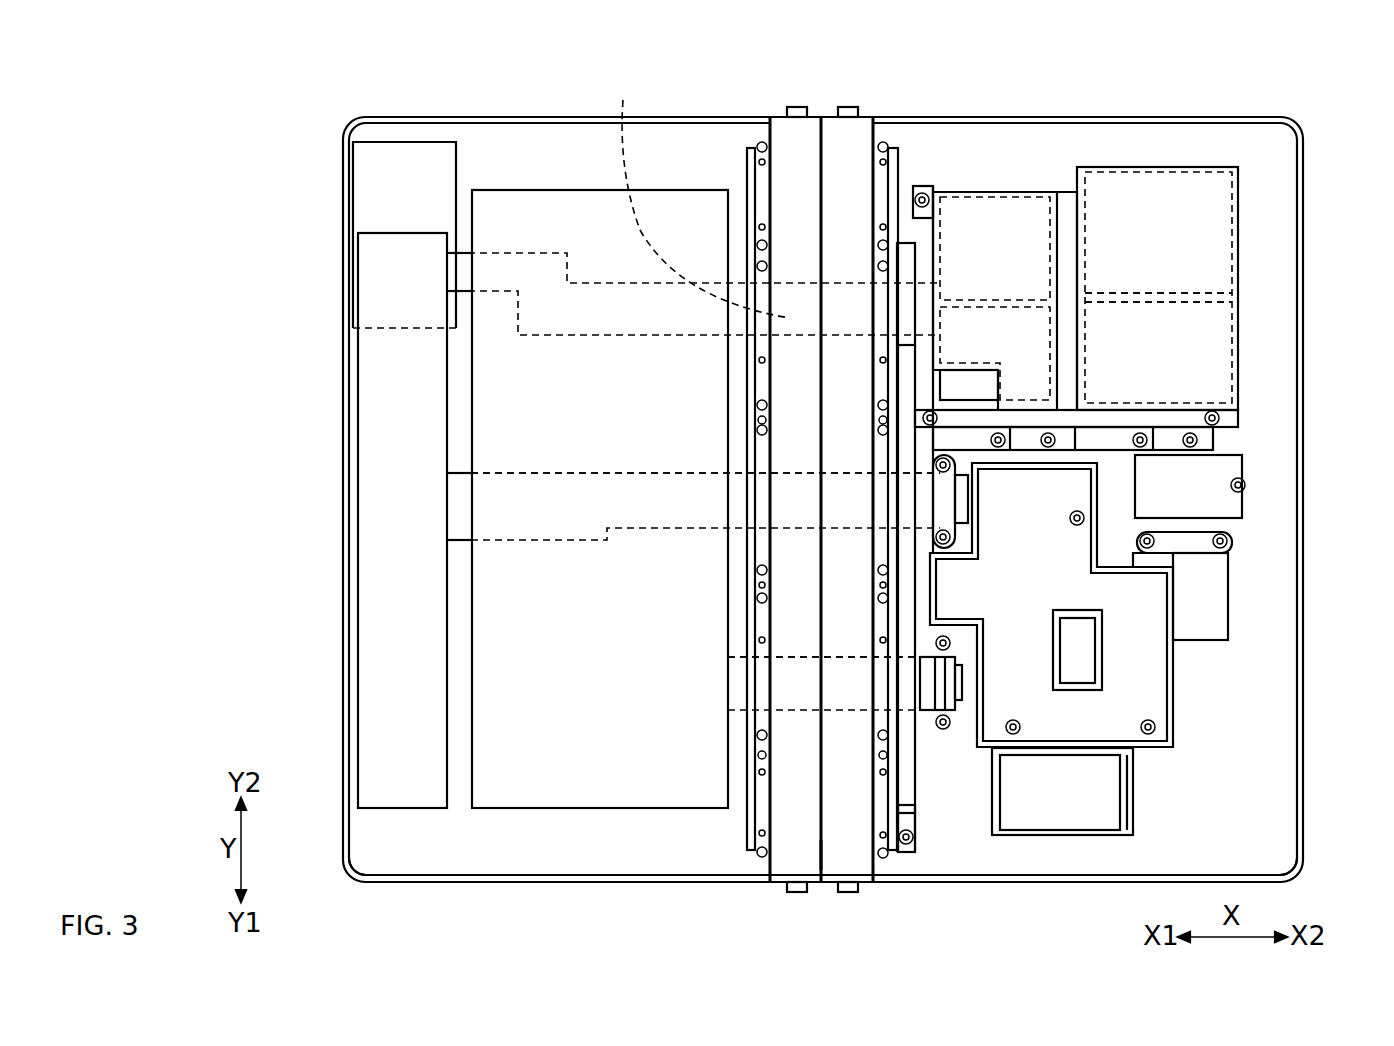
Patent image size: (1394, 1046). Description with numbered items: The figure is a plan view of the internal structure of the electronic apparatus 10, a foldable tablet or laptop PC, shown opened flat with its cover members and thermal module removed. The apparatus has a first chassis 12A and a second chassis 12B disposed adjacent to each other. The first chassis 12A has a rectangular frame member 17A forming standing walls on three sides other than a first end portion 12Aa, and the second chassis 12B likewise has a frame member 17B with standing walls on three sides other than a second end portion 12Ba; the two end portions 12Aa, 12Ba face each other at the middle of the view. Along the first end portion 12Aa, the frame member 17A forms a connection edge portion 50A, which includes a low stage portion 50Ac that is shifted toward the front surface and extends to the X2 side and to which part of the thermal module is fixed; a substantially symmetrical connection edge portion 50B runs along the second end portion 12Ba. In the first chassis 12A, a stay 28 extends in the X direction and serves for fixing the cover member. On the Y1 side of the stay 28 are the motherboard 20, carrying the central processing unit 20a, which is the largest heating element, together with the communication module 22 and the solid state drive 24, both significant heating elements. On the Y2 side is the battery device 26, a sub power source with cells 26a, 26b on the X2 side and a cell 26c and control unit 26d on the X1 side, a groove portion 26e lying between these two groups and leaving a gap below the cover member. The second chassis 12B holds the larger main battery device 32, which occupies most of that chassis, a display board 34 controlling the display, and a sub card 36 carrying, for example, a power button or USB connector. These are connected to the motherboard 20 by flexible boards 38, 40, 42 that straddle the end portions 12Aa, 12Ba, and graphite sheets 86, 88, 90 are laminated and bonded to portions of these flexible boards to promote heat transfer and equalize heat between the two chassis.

The electronic apparatus 10 is at (318, 91).
The first chassis 12A is at (1110, 107).
The second chassis 12B is at (663, 110).
The first end portion 12Aa is at (824, 853).
The second end portion 12Ba is at (818, 805).
The frame member 17A is at (1098, 884).
The frame member 17B is at (450, 882).
The motherboard 20 is at (1135, 688).
The central processing unit 20a is at (1078, 665).
The communication module 22 is at (1058, 815).
The solid state drive 24 is at (1210, 468).
The battery device 26 is at (1158, 200).
The cell 26a is at (1170, 245).
The cell 26b is at (1170, 333).
The cell 26c is at (988, 225).
The control unit 26d is at (967, 345).
The groove portion 26e is at (1066, 220).
The stay 28 is at (1100, 440).
The battery device 32 is at (600, 715).
The display board 34 is at (368, 722).
The sub card 36 is at (368, 187).
The flexible board 38 is at (908, 693).
The flexible board 40 is at (905, 502).
The flexible board 42 is at (907, 300).
The connection edge portion 50A is at (850, 175).
The connection edge portion 50B is at (795, 190).
The low stage portion 50Ac is at (907, 767).
The graphite sheet 86 is at (797, 680).
The graphite sheet 88 is at (790, 500).
The graphite sheet 90 is at (620, 100).